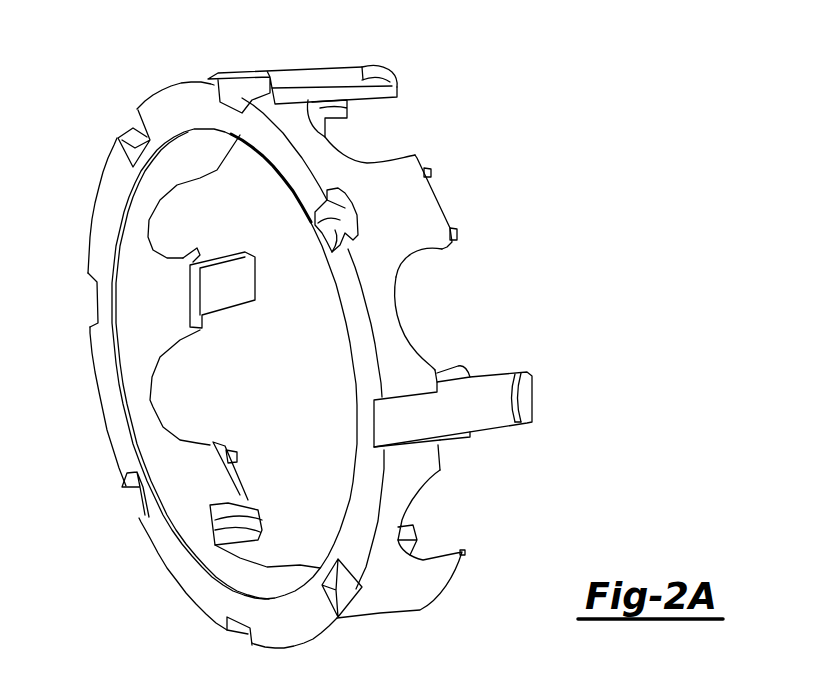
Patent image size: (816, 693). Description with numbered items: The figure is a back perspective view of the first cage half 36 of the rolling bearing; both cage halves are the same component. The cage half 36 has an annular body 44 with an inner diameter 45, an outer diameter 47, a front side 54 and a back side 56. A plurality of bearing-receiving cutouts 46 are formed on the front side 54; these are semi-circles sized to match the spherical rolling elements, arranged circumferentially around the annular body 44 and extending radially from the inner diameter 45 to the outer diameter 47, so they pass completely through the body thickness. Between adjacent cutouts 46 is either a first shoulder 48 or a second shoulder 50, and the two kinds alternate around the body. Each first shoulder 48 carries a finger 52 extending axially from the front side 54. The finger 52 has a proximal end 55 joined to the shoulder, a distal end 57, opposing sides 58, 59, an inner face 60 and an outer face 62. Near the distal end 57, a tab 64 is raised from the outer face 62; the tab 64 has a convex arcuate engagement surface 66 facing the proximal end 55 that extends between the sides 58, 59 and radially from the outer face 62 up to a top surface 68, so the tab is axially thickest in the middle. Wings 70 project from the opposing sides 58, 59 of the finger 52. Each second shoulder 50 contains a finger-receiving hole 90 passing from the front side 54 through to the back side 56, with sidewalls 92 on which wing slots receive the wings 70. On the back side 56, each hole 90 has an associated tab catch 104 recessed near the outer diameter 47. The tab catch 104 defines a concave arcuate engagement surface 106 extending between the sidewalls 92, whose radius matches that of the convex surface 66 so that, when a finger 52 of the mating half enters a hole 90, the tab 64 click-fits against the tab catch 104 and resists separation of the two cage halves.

The first cage half 36 is at (464, 97).
The annular body 44 is at (183, 575).
The inner diameter 45 is at (205, 450).
The bearing-receiving cutouts 46 is at (400, 318).
The outer diameter 47 is at (393, 592).
The first shoulder 48 is at (264, 80).
The second shoulder 50 is at (413, 192).
The finger 52 is at (490, 444).
The front side 54 is at (459, 200).
The proximal end 55 is at (417, 422).
The back side 56 is at (113, 445).
The distal end 57 is at (533, 395).
The side 58 is at (503, 375).
The side 59 is at (483, 428).
The inner face 60 is at (380, 100).
The outer face 62 is at (336, 87).
The tab 64 is at (533, 405).
The arcuate engagement surface 66 is at (508, 408).
The top surface 68 is at (386, 70).
The wings 70 is at (465, 366).
The finger-receiving hole 90 is at (318, 238).
The sidewalls 92 is at (316, 206).
The tab catch 104 is at (410, 253).
The arcuate engagement surface 106 is at (328, 263).